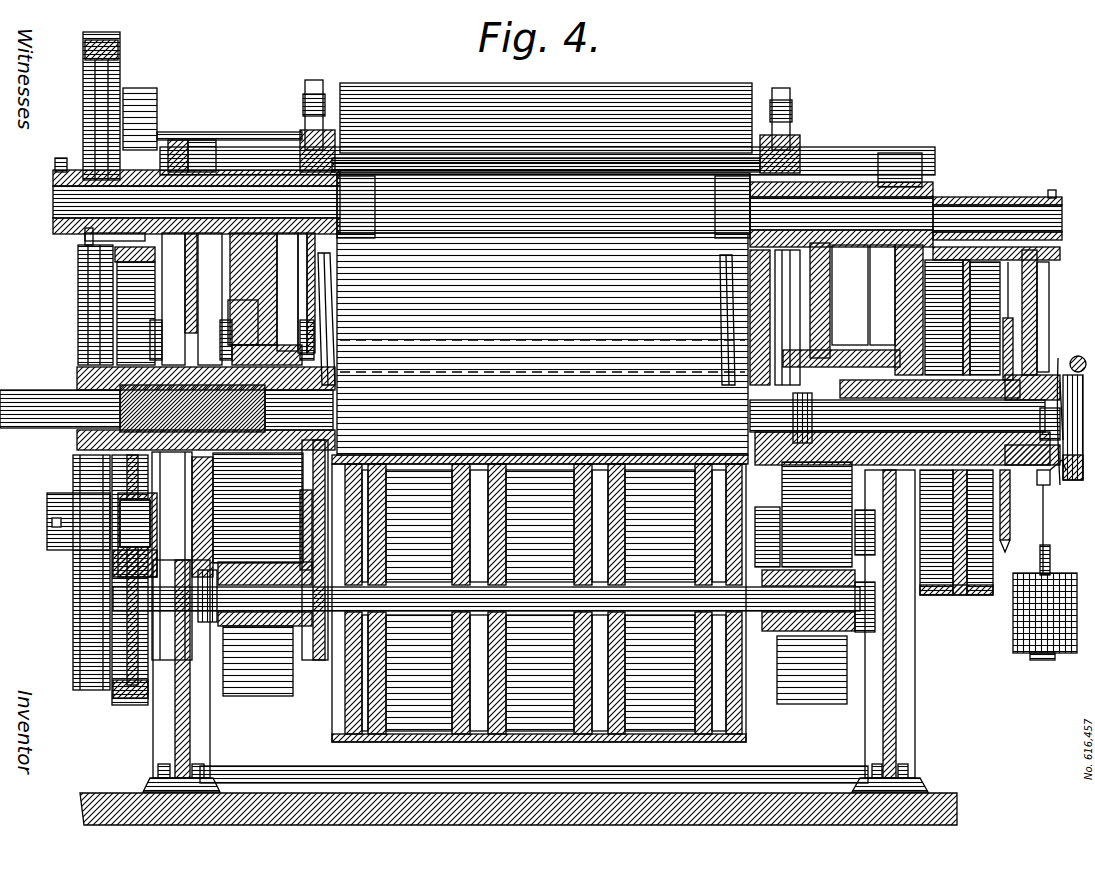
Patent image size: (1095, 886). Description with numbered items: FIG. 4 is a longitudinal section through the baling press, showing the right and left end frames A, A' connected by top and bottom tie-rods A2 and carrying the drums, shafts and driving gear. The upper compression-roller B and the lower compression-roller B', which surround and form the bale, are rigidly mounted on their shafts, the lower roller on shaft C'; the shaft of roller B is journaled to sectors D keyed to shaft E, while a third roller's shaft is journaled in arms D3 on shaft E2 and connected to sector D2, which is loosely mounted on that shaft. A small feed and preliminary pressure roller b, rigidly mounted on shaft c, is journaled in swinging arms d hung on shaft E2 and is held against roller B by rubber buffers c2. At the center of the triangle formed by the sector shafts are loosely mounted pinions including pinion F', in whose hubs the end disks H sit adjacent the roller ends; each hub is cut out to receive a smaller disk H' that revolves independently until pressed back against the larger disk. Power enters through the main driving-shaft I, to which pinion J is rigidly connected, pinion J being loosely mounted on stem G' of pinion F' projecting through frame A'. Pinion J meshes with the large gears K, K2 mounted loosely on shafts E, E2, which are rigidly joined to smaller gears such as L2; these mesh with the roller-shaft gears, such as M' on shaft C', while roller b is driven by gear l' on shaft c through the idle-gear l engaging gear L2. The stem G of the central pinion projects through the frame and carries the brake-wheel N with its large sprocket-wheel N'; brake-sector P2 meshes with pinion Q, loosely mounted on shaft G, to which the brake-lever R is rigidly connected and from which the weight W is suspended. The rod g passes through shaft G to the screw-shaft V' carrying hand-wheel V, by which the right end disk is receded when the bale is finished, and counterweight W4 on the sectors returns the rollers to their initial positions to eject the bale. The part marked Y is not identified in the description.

The right end frame A is at (896, 631).
The left end frame A' is at (157, 676).
The tie-rods A2 is at (252, 150).
The compression-roller B is at (541, 318).
The lower compression-roller B' is at (539, 612).
The feed and preliminary pressure roller b is at (582, 92).
The roller shaft C' is at (494, 614).
The roller shaft c is at (226, 140).
The rubber buffers c2 is at (303, 104).
The sector D is at (290, 535).
The sector D2 is at (256, 260).
The arms D3 is at (306, 252).
The swinging arms d is at (330, 128).
The shaft E is at (47, 532).
The shaft E2 is at (55, 197).
The pinion F' is at (561, 295).
The stem of pinion F G is at (982, 421).
The stem of pinion F' G' is at (192, 299).
The rod g is at (884, 332).
The end disks H is at (445, 319).
The smaller disk H' is at (825, 317).
The main driving-shaft I is at (60, 397).
The pinion J is at (77, 374).
The large gear K is at (73, 632).
The large gear K2 is at (120, 55).
The smaller gear L2 is at (115, 258).
The idle-gear l is at (189, 135).
The gear l' is at (151, 107).
The gear M' is at (105, 592).
The brake-wheel N is at (960, 442).
The large sprocket-wheel N' is at (1036, 321).
The brake-sector P2 is at (1037, 300).
The pinion Q is at (1014, 511).
The brake-lever R is at (1050, 485).
The hand-wheel V is at (918, 411).
The screw-shaft V' is at (1073, 381).
The weight W is at (1032, 653).
The counterweight W4 is at (280, 696).
The bearing Y is at (1052, 311).